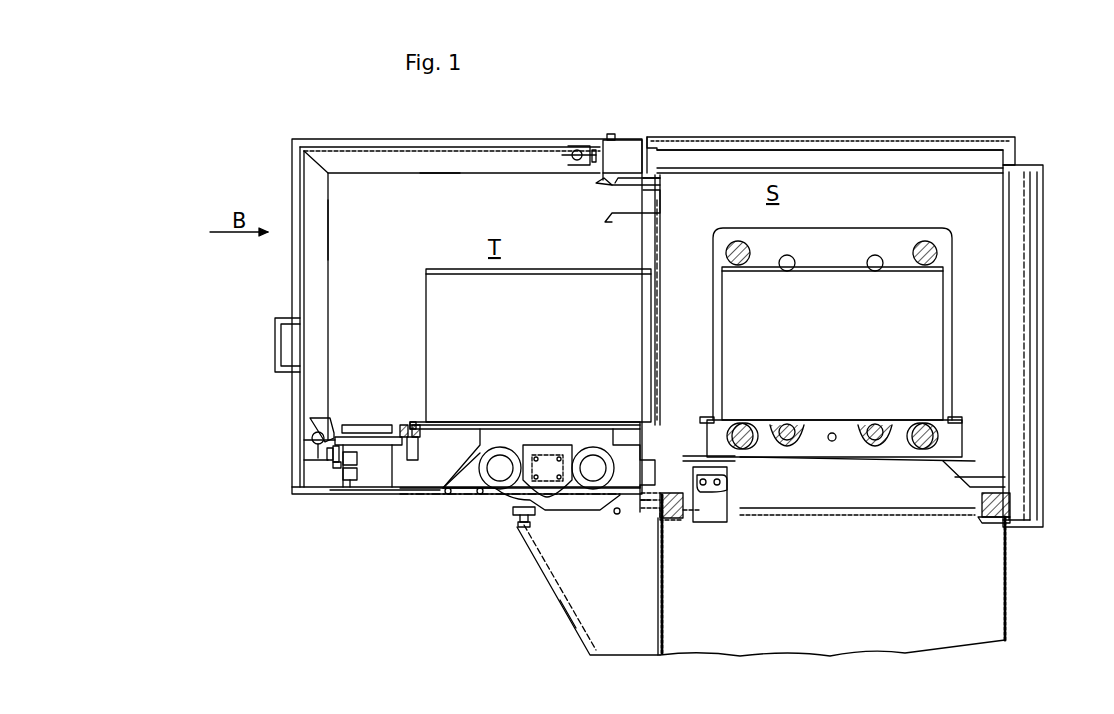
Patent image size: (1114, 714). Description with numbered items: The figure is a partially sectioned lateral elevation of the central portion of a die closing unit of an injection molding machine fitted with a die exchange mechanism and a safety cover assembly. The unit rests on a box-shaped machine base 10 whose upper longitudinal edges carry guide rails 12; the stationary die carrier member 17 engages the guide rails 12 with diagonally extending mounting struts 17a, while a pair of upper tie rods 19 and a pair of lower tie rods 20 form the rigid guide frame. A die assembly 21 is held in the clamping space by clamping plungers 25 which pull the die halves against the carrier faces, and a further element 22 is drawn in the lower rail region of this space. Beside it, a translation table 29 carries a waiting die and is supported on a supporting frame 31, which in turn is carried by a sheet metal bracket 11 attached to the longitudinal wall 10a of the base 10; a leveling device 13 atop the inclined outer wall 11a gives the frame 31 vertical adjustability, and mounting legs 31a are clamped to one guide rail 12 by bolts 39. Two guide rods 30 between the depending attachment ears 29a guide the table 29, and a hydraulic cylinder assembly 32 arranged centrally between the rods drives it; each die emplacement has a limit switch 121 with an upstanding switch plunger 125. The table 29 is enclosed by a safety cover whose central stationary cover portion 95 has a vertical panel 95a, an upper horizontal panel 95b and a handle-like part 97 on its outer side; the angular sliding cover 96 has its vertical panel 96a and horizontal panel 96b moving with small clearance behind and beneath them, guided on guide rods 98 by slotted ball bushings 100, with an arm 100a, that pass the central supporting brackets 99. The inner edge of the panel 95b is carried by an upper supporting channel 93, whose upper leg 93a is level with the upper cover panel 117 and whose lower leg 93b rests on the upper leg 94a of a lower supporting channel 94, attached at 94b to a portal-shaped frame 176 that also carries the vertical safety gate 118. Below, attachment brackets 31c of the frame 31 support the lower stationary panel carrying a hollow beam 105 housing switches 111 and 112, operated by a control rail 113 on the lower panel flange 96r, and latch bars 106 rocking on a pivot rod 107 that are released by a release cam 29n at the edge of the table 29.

The machine base 10 is at (1008, 577).
The longitudinal wall 10a is at (666, 603).
The sheet metal bracket 11 is at (588, 590).
The inclined outer wall 11a is at (572, 626).
The guide rail 12 is at (992, 520).
The leveling device 13 is at (521, 528).
The stationary die carrier member 17 is at (818, 226).
The mounting struts 17a is at (960, 475).
The upper tie rods 19 is at (738, 266).
The lower tie rods 20 is at (740, 422).
The die assembly 21 is at (848, 264).
The support rail 22 is at (680, 418).
The clamping plungers 25 is at (874, 424).
The translation table 29 is at (518, 420).
The attachment ears 29a is at (605, 490).
The release cam 29n is at (410, 425).
The guide rods 30 is at (500, 485).
The supporting frame 31 is at (567, 498).
The mounting legs 31a is at (665, 530).
The attachment brackets 31c is at (464, 478).
The hydraulic cylinder assembly 32 is at (550, 452).
The bolts 39 is at (650, 490).
The upper supporting channel 93 is at (638, 137).
The upper leg portion 93a is at (625, 140).
The lower leg portion 93b is at (598, 182).
The lower supporting channel 94 is at (628, 218).
The upper leg portion 94a is at (690, 212).
The attachment point 94b is at (660, 182).
The central stationary cover portion 95 is at (322, 136).
The vertical stationary panel 95a is at (298, 262).
The upper horizontal stationary panel 95b is at (474, 140).
The sliding cover 96 is at (300, 188).
The vertical panel 96a is at (316, 205).
The horizontal panel 96b is at (414, 165).
The lower panel flange 96r is at (320, 436).
The handle 97 is at (292, 318).
The guide rods 98 is at (574, 150).
The central supporting brackets 99 is at (594, 150).
The ball bushings 100 is at (318, 425).
The latch lever arm 100a is at (572, 164).
The hollow beam 105 is at (366, 437).
The latch bar 106 is at (352, 424).
The pivot rod 107 is at (378, 440).
The switches 111 is at (360, 484).
The switches 112 is at (352, 482).
The control rail 113 is at (332, 465).
The upper cover panel 117 is at (826, 133).
The vertical safety gate 118 is at (1046, 320).
The limit switch 121 is at (418, 448).
The switch plunger 125 is at (428, 437).
The portal-shaped frame 176 is at (990, 262).